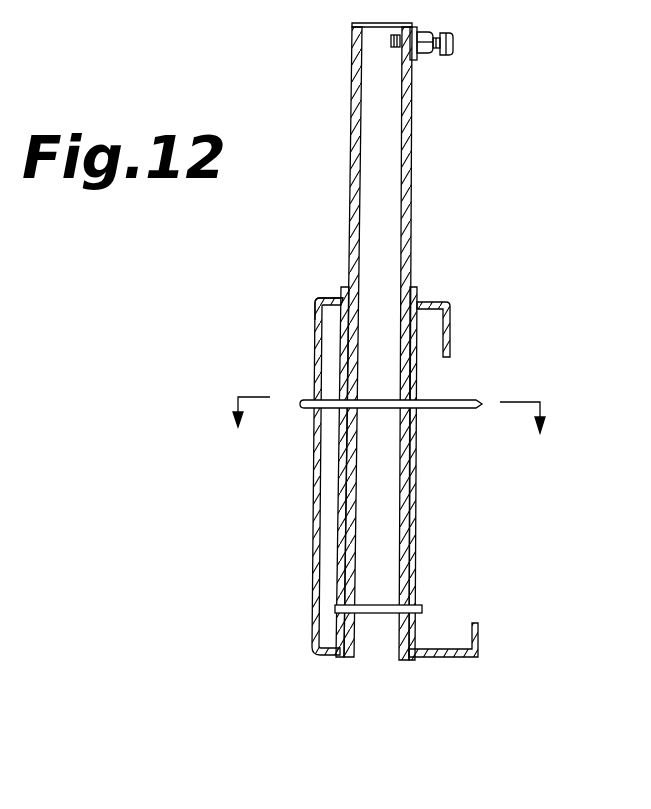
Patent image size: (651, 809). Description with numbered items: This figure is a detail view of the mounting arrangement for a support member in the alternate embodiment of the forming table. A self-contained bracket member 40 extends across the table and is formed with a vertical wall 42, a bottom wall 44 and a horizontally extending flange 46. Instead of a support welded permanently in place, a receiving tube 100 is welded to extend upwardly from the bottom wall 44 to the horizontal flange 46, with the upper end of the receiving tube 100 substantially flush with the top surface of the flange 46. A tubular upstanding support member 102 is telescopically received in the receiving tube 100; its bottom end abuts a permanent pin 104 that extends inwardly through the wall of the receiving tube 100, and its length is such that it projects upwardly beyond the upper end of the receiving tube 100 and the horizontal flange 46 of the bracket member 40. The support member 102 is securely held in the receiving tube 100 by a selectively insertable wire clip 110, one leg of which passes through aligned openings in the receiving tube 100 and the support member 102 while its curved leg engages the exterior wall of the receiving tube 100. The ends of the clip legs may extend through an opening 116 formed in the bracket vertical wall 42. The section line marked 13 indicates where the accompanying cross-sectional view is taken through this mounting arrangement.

The upstanding support member 102 is at (410, 188).
The receiving tube 100 is at (417, 377).
The bracket member 40 is at (314, 294).
The vertical wall 42 is at (315, 342).
The horizontally extending flange 46 is at (432, 302).
The bottom wall 44 is at (440, 657).
The permanent pin 104 is at (423, 603).
The wire clip 110 is at (442, 408).
The opening 116 is at (310, 428).
The section line 13- 13 is at (385, 414).